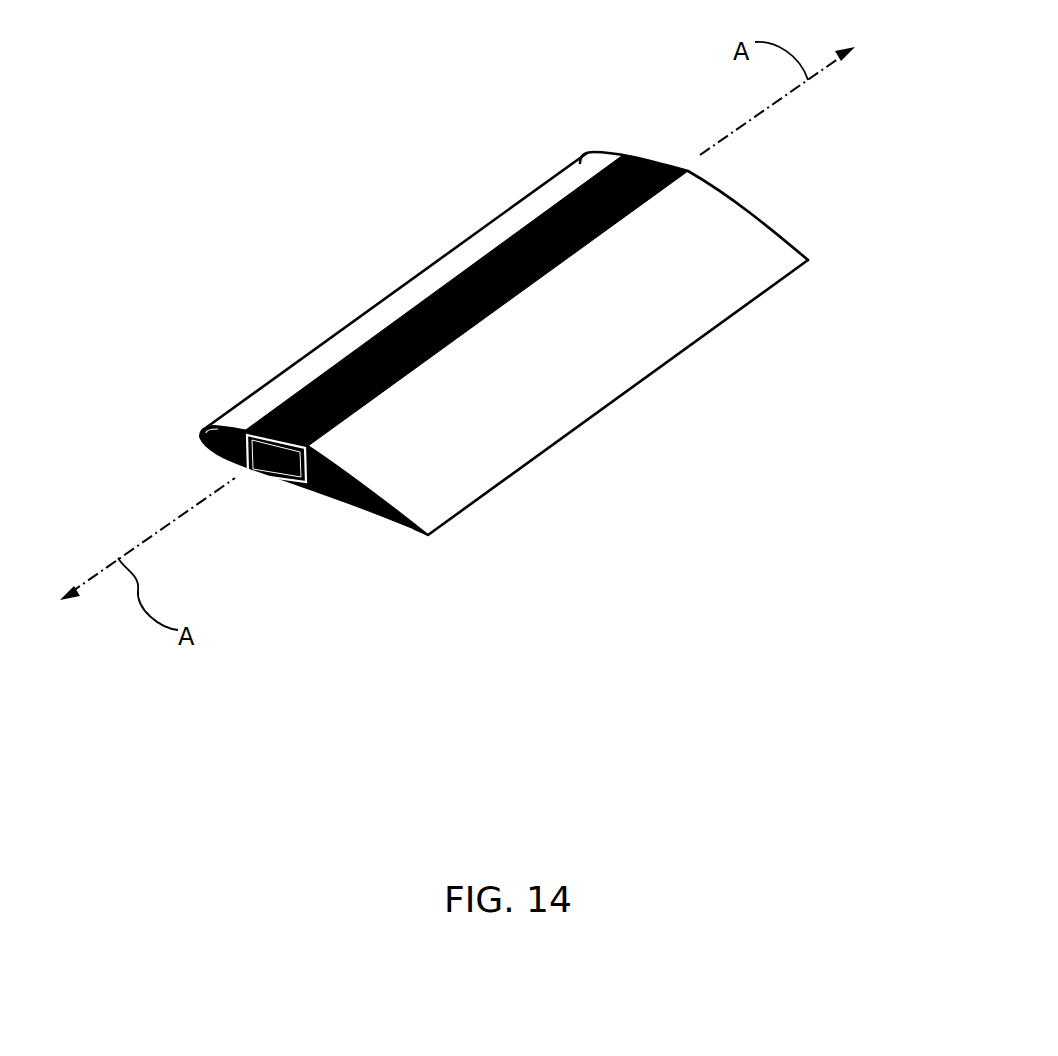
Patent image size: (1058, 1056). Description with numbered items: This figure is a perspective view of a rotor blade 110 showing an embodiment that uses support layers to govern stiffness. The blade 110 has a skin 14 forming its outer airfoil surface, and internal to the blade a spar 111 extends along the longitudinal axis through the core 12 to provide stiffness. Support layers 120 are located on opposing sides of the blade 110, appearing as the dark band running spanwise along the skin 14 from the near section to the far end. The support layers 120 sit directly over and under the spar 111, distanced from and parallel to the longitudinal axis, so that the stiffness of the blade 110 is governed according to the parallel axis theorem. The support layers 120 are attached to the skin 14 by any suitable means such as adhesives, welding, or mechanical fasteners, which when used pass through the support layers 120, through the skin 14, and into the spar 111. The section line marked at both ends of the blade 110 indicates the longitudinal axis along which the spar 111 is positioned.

The blade 110 is at (472, 122).
The skin 14 is at (740, 252).
The support layers 120 is at (312, 378).
The core 12 is at (226, 457).
The spar 111 is at (287, 480).